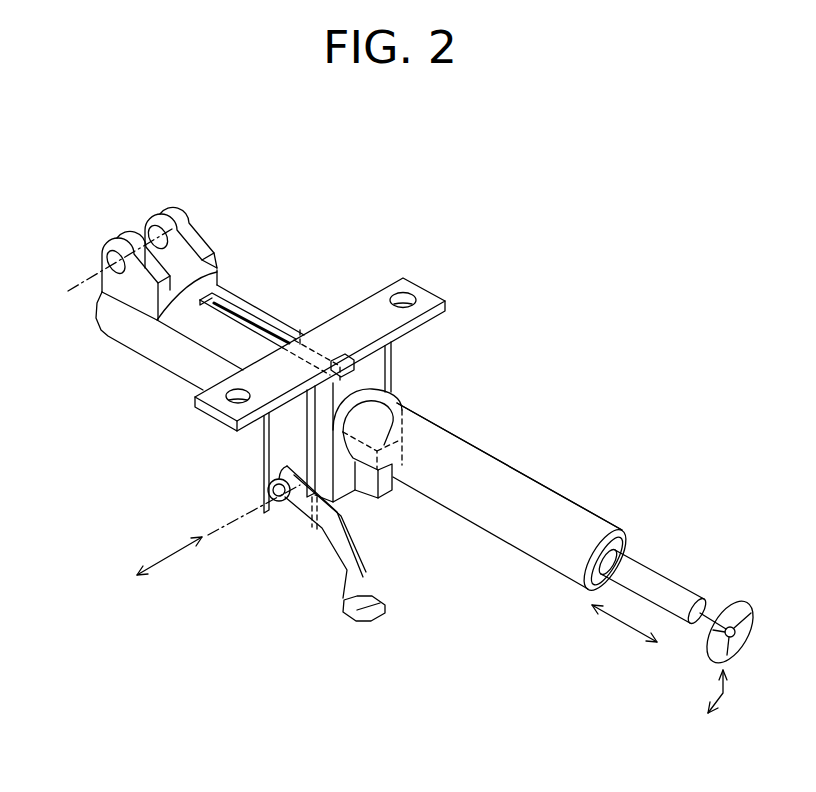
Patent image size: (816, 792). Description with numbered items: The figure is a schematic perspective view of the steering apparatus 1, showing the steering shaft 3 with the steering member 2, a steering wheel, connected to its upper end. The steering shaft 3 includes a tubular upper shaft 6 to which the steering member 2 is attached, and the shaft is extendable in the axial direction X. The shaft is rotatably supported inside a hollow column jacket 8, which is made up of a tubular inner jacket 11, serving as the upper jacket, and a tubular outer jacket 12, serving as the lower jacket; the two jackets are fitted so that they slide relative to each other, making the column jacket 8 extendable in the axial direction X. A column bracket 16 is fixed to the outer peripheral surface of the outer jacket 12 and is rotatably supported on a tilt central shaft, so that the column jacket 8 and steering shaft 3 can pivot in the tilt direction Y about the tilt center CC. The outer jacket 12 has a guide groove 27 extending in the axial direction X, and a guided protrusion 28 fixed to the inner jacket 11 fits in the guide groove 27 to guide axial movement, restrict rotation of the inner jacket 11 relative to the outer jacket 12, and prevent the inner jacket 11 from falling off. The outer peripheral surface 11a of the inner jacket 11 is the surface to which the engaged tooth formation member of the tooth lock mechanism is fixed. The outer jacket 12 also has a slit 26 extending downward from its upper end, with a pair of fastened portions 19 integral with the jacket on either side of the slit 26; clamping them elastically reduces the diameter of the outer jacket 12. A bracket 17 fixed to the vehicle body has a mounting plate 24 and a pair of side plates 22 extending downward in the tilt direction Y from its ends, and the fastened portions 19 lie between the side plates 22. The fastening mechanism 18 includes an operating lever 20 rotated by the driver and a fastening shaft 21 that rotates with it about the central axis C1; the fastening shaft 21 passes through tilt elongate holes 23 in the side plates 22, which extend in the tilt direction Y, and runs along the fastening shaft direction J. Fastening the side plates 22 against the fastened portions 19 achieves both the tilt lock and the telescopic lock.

The steering apparatus 1 is at (712, 545).
The steering member 2 is at (747, 603).
The steering shaft 3 is at (644, 562).
The upper shaft 6 is at (673, 587).
The column jacket 8 is at (603, 509).
The inner jacket 11 is at (572, 501).
The outer peripheral surface of the inner jacket 11a is at (513, 487).
The outer jacket 12 is at (162, 354).
The column bracket 16 is at (185, 245).
The bracket 17 is at (284, 425).
The fastening mechanism 18 is at (318, 550).
The fastened portions 19 is at (393, 453).
The operating lever 20 is at (362, 578).
The fastening shaft 21 is at (270, 503).
The side plates 22 is at (277, 453).
The tilt elongate holes 23 is at (278, 513).
The mounting plate 24 is at (364, 303).
The slit 26 is at (360, 487).
The guide groove 27 is at (243, 313).
The guided protrusion 28 is at (297, 343).
The tilt center CC is at (78, 282).
The central axis of the fastening shaft C1 is at (220, 522).
The fastening shaft direction J is at (170, 558).
The axial direction X is at (613, 617).
The tilt direction Y is at (724, 693).